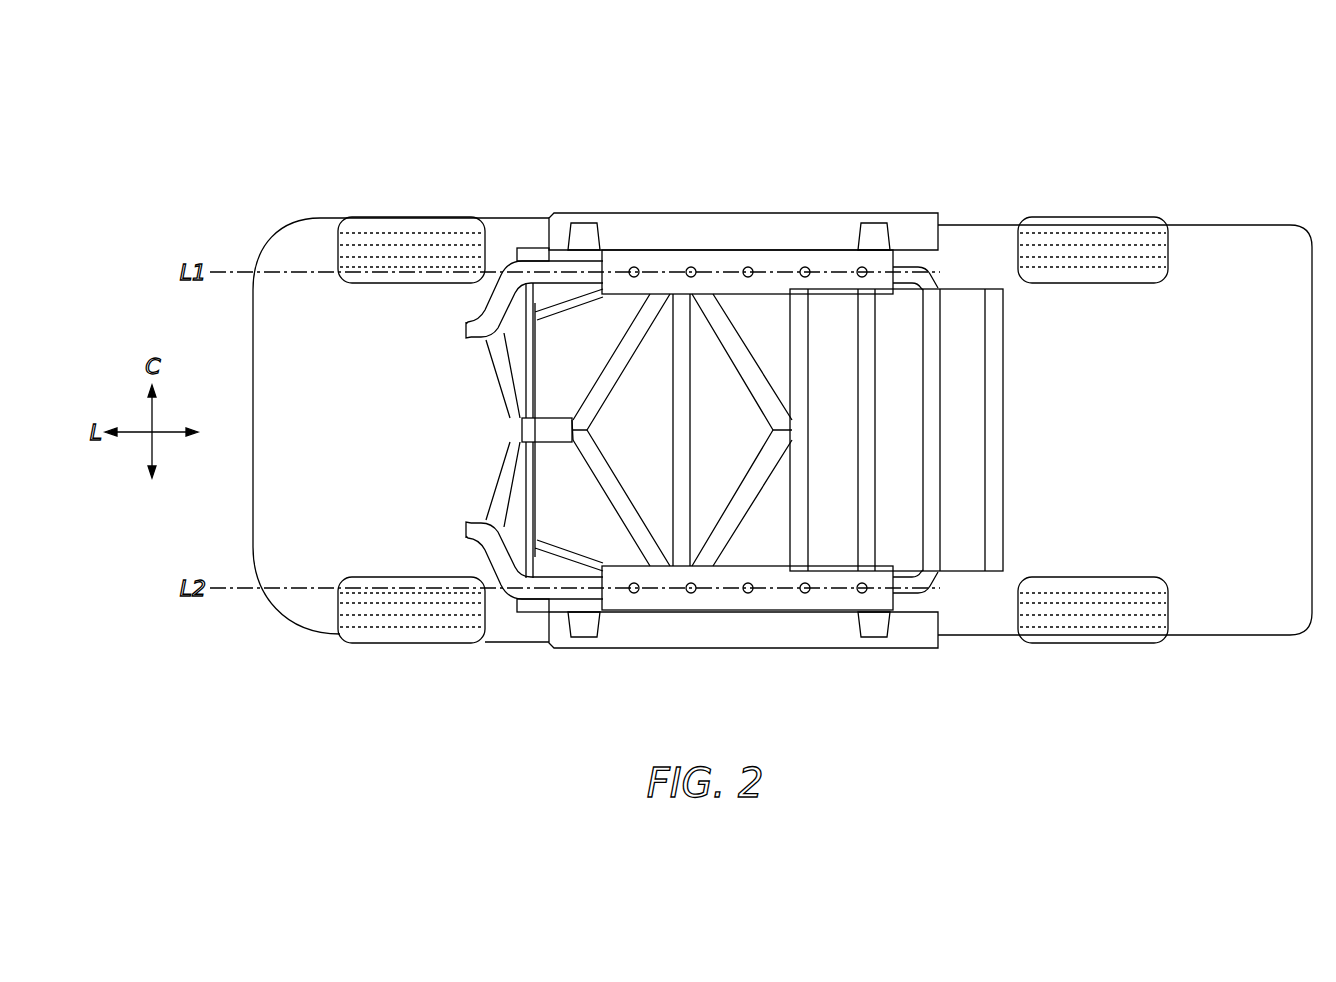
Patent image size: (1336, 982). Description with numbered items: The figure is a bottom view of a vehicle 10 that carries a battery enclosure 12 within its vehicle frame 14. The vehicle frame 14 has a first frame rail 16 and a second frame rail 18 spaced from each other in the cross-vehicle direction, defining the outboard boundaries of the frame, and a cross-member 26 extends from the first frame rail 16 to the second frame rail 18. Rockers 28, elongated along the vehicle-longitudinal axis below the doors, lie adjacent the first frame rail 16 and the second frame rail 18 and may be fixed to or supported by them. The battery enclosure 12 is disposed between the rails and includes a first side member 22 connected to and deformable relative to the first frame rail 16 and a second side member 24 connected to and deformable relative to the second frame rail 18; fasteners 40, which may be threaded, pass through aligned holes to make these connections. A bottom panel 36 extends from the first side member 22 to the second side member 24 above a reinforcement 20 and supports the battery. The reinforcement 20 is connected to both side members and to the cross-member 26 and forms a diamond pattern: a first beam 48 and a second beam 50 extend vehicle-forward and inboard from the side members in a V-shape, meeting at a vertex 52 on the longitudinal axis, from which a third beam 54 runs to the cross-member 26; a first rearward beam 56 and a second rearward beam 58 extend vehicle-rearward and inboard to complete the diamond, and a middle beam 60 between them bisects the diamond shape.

The vehicle 10 is at (325, 133).
The battery enclosure 12 is at (1033, 400).
The vehicle frame 14 is at (449, 524).
The first frame rail 16 is at (525, 248).
The second frame rail 18 is at (533, 603).
The reinforcement 20 is at (571, 468).
The first side member 22 is at (652, 262).
The second side member 24 is at (730, 600).
The cross-member 26 is at (517, 380).
The rockers 28 is at (726, 222).
The bottom panel 36 is at (968, 497).
The fasteners 40 is at (805, 266).
The first beam 48 is at (605, 368).
The second beam 50 is at (600, 488).
The vertex 52 is at (585, 430).
The third beam 54 is at (527, 430).
The first rearward beam 56 is at (742, 334).
The second rearward beam 58 is at (743, 522).
The middle beam 60 is at (682, 430).